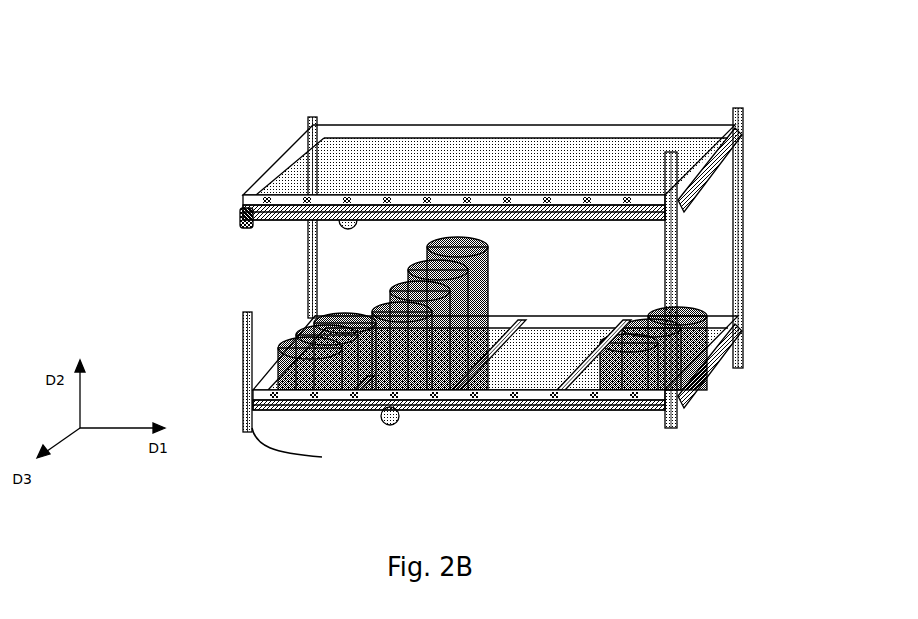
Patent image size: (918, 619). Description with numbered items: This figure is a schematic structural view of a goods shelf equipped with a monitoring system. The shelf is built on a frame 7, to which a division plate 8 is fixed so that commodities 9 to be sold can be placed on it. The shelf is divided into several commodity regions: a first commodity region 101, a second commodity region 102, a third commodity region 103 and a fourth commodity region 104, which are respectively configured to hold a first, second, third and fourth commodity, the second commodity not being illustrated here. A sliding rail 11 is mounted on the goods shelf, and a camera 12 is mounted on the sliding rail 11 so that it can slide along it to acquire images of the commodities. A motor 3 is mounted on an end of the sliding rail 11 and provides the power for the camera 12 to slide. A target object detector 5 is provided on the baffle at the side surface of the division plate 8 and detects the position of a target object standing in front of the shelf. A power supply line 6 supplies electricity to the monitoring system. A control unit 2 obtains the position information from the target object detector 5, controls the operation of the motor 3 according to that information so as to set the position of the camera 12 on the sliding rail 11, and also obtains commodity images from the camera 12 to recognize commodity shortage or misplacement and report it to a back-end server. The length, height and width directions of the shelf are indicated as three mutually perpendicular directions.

The control unit 2 is at (447, 171).
The motor 3 is at (190, 240).
The target object detector 5 is at (454, 134).
The power supply line 6 is at (238, 418).
The frame 7 is at (788, 238).
The division plate 8 is at (492, 110).
The commodities 9 is at (555, 300).
The sliding rail 11 is at (486, 459).
The camera 12 is at (445, 451).
The first commodity region 101 is at (592, 375).
The second commodity region 102 is at (540, 366).
The third commodity region 103 is at (495, 333).
The fourth commodity region 104 is at (273, 372).